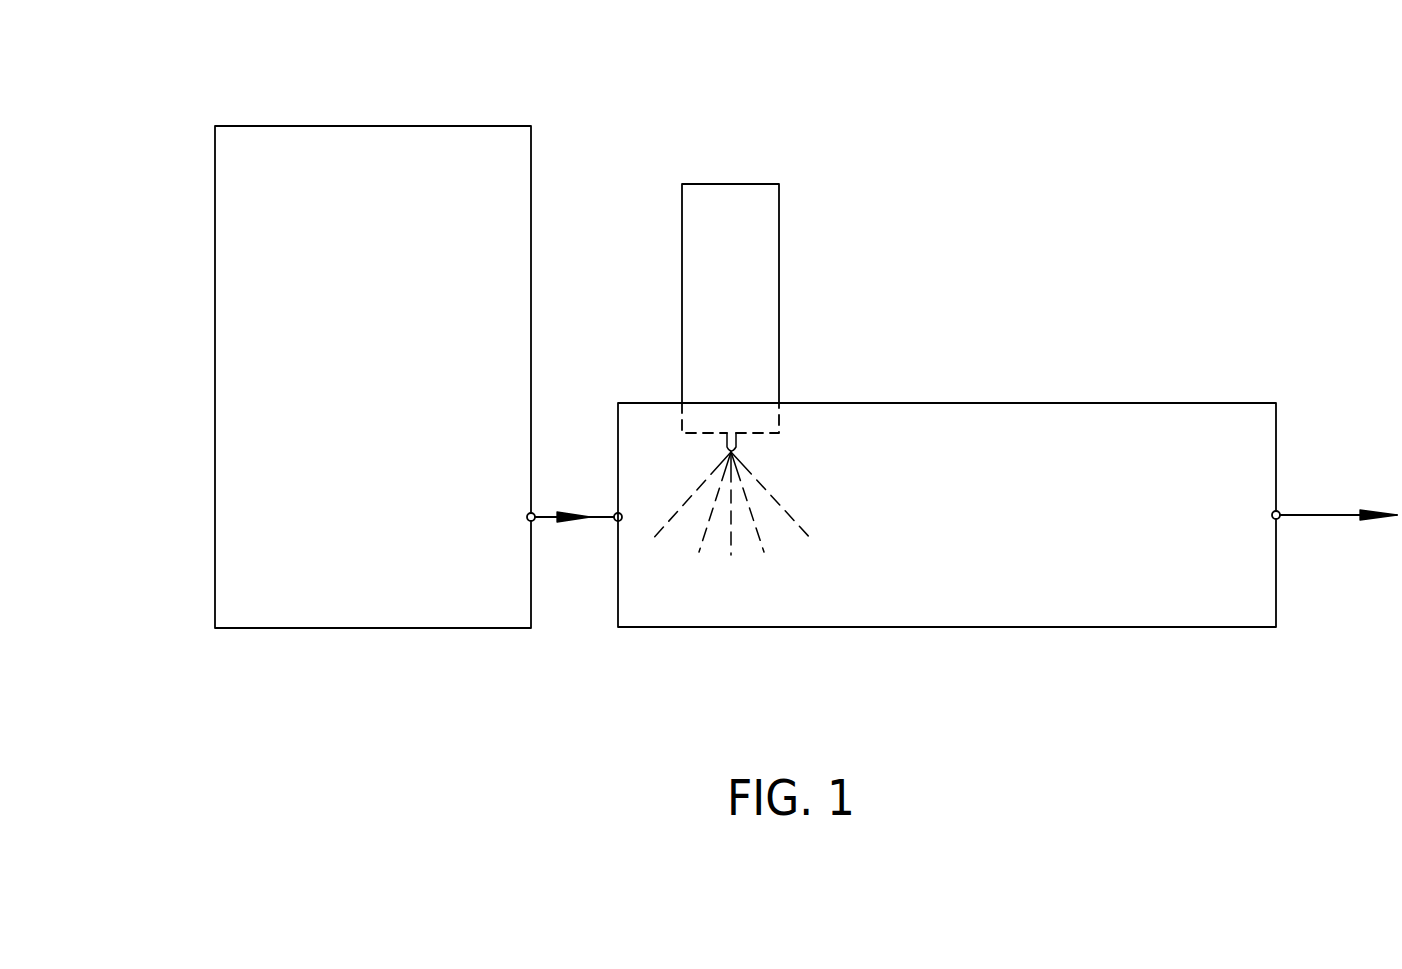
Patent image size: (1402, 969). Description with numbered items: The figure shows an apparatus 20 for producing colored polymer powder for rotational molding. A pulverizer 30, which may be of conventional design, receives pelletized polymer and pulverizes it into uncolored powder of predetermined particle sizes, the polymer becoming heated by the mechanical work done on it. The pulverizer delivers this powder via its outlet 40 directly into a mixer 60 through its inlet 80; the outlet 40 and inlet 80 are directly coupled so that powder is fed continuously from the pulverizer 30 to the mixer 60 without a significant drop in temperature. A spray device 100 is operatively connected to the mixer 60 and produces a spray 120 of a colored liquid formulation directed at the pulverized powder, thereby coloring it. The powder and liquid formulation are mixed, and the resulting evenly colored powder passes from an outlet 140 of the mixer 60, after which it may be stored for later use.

The apparatus 20 is at (685, 135).
The pulverizer 30 is at (325, 275).
The outlet 40 is at (538, 529).
The mixer 60 is at (1030, 537).
The inlet 80 is at (619, 521).
The spray device 100 is at (740, 283).
The spray 120 is at (777, 498).
The outlet 140 is at (1277, 443).